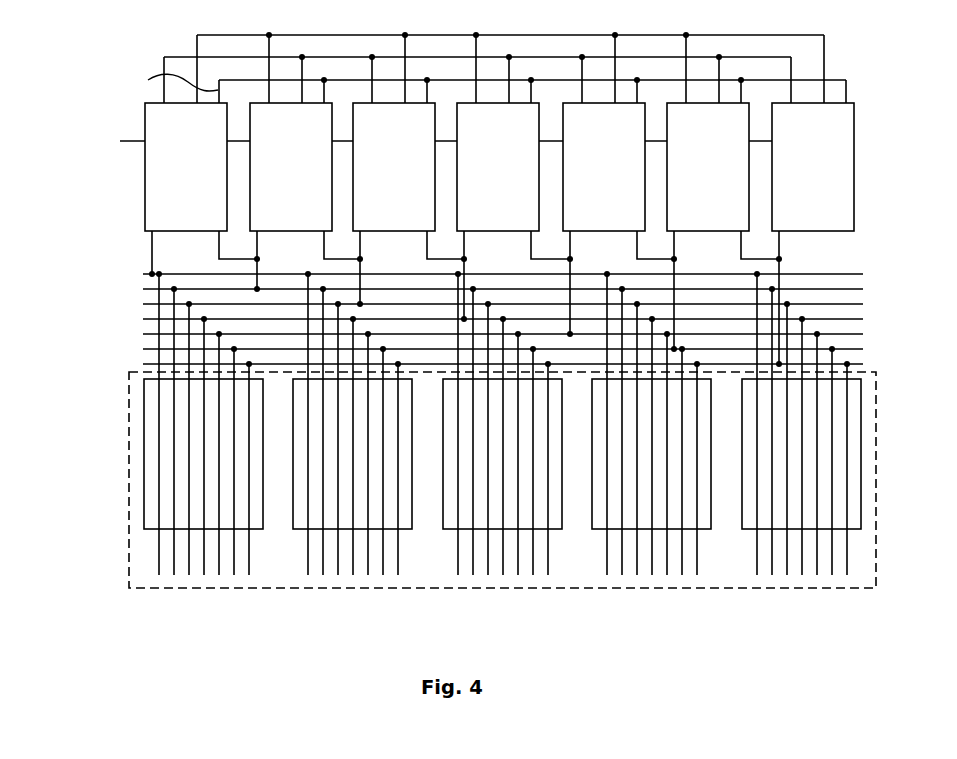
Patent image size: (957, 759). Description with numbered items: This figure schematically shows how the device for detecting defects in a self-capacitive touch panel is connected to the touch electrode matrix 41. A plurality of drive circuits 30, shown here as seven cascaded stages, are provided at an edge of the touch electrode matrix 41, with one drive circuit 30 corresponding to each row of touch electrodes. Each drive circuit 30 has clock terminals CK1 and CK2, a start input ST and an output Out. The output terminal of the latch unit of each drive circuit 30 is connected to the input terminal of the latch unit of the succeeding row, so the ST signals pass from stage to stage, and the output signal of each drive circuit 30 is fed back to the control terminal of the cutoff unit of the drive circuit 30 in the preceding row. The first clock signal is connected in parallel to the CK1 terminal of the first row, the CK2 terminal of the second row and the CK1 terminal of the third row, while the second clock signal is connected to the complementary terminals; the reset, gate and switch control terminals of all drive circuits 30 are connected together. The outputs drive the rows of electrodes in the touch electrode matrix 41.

The drive circuit 30 is at (445, 199).
The touch electrode matrix 41 is at (131, 372).